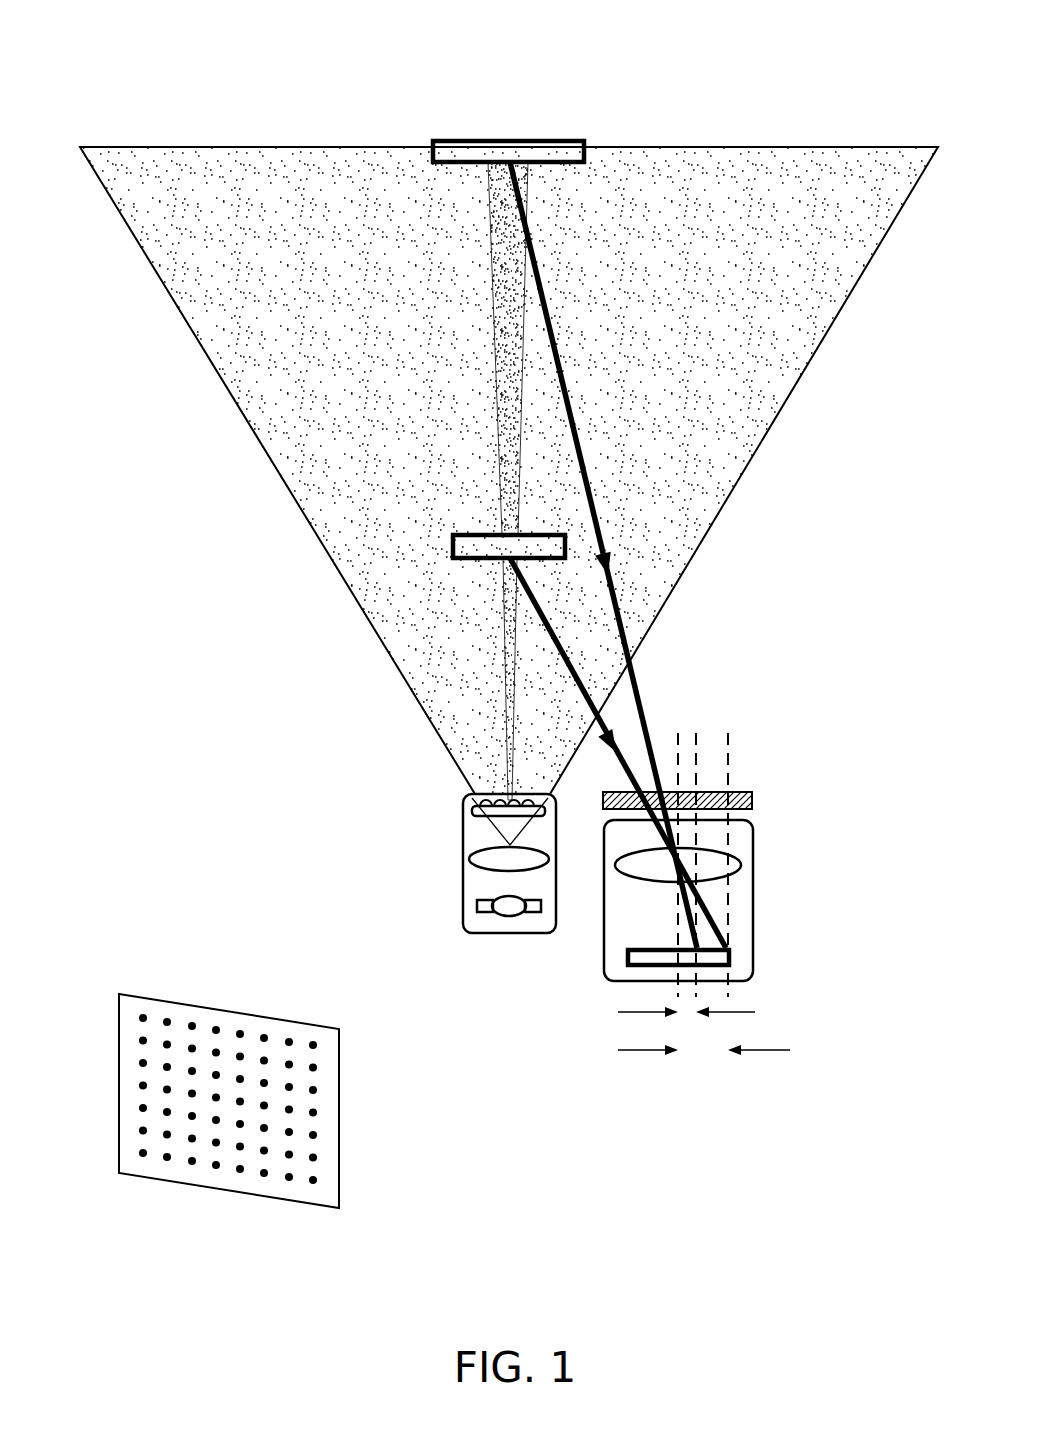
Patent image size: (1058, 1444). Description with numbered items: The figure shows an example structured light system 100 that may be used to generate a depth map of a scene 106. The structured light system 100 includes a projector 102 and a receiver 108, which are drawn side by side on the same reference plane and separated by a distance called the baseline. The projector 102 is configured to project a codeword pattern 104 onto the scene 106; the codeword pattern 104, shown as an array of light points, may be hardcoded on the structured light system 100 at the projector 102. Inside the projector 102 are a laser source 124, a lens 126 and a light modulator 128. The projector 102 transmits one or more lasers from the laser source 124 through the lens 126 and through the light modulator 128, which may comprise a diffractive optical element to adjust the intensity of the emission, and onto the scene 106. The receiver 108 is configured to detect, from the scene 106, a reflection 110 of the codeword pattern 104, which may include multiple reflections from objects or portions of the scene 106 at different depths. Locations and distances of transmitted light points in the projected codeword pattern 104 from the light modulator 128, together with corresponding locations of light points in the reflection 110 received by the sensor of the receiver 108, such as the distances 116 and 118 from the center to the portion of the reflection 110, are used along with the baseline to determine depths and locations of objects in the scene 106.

The structured light system 100 is at (158, 58).
The projector 102 is at (463, 836).
The codeword pattern 104 is at (135, 995).
The scene 106 is at (460, 163).
The receiver 108 is at (755, 835).
The reflection 110 is at (735, 958).
The distance 116 is at (695, 990).
The distance 118 is at (728, 1038).
The laser source 124 is at (503, 918).
The lens 126 is at (462, 860).
The light modulator 128 is at (465, 808).